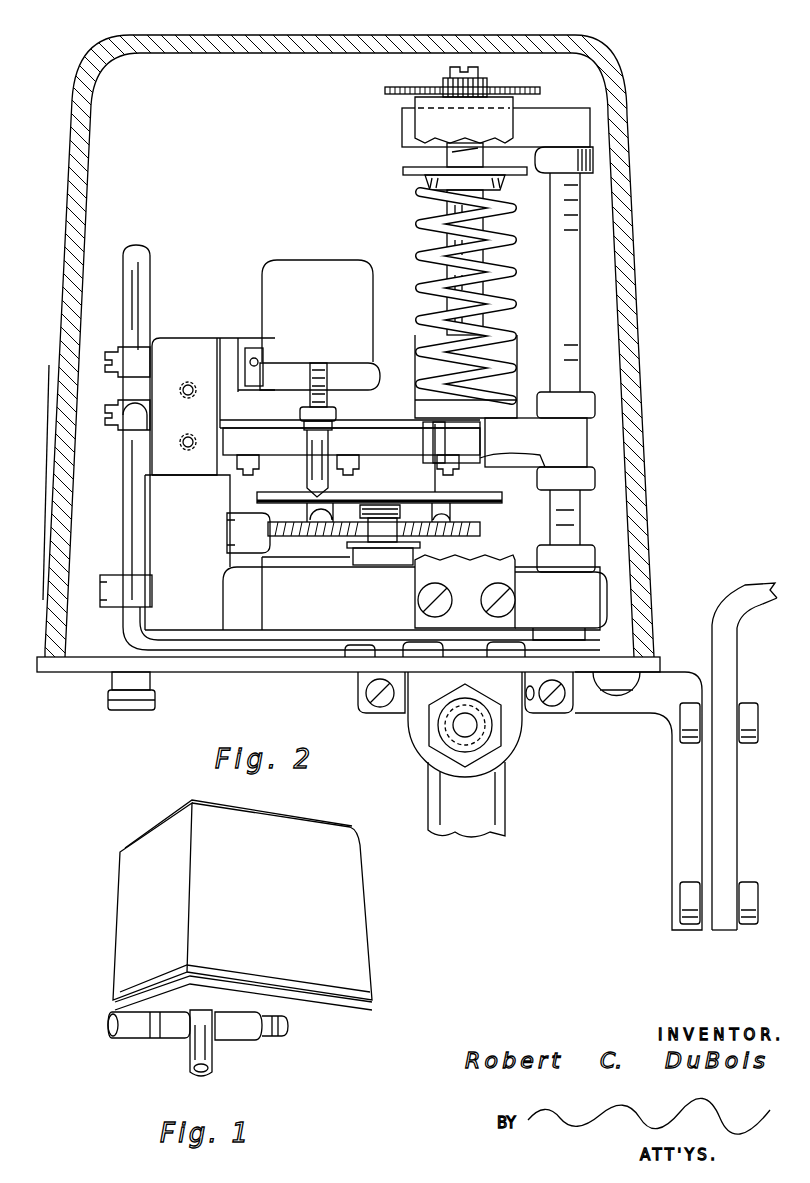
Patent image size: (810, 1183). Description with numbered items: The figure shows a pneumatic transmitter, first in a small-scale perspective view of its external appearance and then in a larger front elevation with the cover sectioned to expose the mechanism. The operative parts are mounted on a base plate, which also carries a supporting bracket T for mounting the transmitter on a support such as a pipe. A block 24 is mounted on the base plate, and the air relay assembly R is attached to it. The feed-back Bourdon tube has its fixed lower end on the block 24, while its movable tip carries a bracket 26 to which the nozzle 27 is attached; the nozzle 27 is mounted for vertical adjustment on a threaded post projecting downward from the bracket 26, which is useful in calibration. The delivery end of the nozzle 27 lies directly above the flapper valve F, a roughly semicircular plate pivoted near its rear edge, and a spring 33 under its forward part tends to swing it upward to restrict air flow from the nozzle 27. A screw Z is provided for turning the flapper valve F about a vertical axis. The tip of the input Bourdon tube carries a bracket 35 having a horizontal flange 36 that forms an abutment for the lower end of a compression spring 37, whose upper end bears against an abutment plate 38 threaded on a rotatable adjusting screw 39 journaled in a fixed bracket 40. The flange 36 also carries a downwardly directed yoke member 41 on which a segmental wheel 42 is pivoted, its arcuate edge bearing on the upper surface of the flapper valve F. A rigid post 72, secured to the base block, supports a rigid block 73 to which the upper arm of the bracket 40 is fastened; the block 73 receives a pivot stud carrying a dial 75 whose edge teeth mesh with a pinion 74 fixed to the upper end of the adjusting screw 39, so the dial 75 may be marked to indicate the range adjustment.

The air relay assembly R is at (211, 323).
The bracket 26 is at (355, 376).
The nozzle member 27 is at (322, 460).
The flapper valve F is at (408, 492).
The yoke member 41 is at (423, 446).
The segmental wheel 42 is at (453, 474).
The horizontal flange 36 is at (495, 412).
The rigid post 72 is at (567, 281).
The rigid block 73 is at (550, 117).
The fixed bracket 40 is at (430, 122).
The pinion 74 is at (484, 90).
The adjusting screw 39 is at (450, 73).
The dial 75 is at (386, 90).
The abutment plate 38 is at (404, 173).
The compression spring 37 is at (496, 277).
The bracket 35 is at (492, 355).
The screw Z is at (227, 534).
The spring 33 is at (345, 545).
The block 24 is at (290, 616).
The supporting bracket T is at (683, 795).